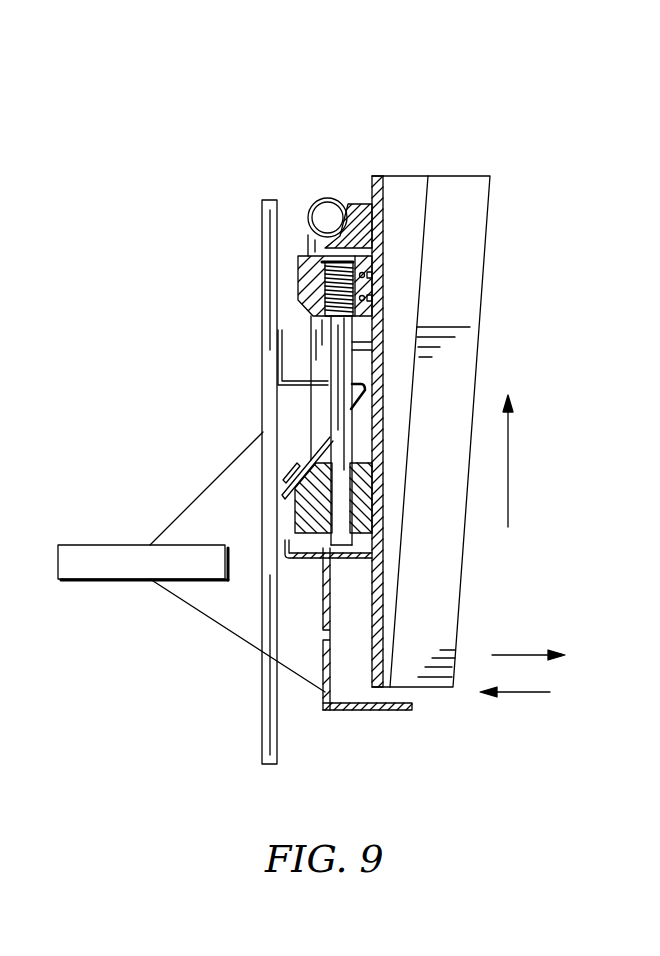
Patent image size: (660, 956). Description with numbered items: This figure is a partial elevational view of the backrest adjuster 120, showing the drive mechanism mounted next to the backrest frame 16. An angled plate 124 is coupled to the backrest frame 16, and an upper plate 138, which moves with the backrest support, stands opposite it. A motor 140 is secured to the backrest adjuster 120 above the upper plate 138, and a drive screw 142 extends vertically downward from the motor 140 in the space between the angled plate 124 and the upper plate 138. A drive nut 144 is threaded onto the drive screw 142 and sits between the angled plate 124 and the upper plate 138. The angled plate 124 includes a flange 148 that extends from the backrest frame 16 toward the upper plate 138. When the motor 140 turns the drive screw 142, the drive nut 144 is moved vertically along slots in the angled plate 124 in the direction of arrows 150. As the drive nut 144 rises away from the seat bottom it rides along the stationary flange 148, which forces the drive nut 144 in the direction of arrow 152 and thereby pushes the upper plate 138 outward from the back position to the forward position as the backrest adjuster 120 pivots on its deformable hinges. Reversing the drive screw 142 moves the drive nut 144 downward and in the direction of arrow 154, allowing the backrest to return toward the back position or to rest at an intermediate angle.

The backrest frame 16 is at (118, 545).
The backrest adjuster 120 is at (518, 150).
The angled plate 124 is at (282, 342).
The upper plate 138 is at (375, 174).
The motor 140 is at (308, 278).
The drive screw 142 is at (332, 410).
The drive nut 144 is at (360, 522).
The flange 148 is at (367, 395).
The arrows 150 is at (508, 472).
The arrow 152 is at (520, 655).
The arrow 154 is at (525, 692).